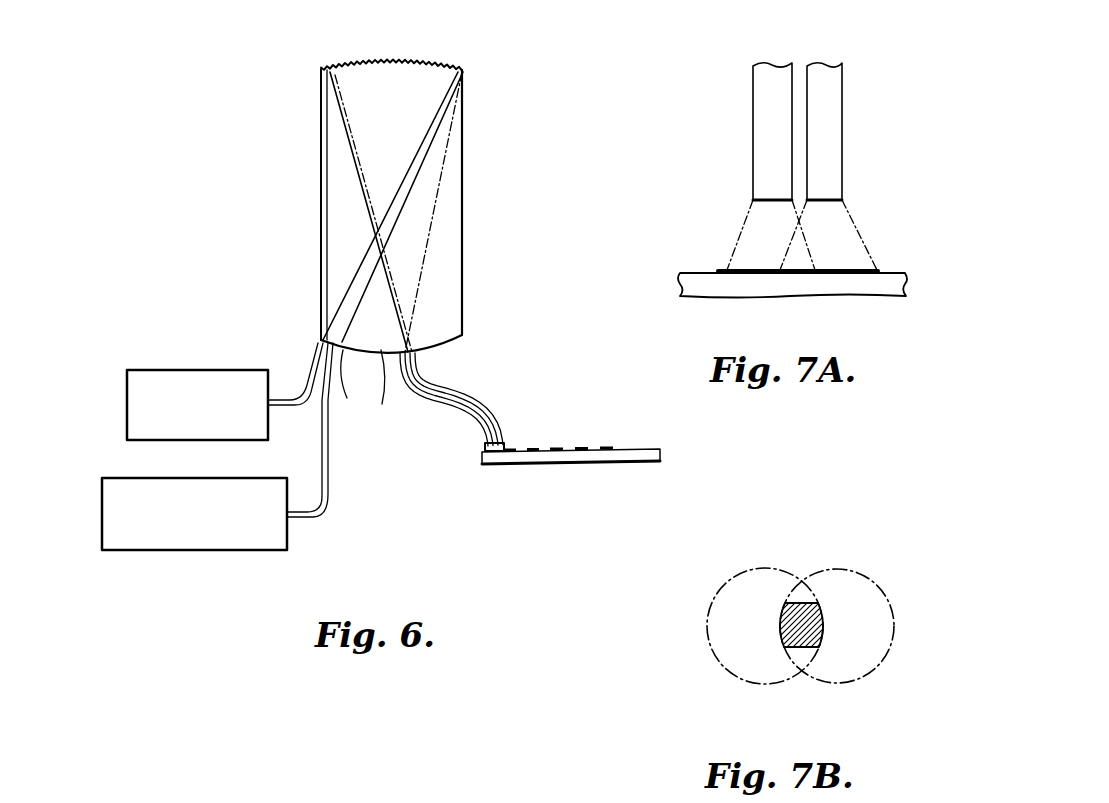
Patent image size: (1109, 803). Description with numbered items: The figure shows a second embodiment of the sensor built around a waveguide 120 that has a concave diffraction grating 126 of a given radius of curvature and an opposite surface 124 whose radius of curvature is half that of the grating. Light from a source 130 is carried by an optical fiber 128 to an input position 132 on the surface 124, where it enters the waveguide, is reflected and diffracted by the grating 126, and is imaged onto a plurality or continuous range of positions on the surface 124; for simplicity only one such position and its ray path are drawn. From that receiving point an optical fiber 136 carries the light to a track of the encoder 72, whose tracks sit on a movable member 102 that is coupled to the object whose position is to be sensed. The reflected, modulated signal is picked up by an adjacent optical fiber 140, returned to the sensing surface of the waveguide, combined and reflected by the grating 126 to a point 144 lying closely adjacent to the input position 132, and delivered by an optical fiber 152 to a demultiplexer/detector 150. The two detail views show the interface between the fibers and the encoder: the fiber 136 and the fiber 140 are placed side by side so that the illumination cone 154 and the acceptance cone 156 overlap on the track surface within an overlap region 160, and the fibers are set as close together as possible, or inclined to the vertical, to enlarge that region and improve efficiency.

In FIG. 6, the encoder 72 is at (545, 428).
In FIG. 7A, the movable member 102 is at (900, 281).
In FIG. 6, the waveguide 120 is at (320, 146).
In FIG. 6, the surface 124 is at (381, 405).
In FIG. 6, the concave diffraction grating 126 is at (396, 58).
In FIG. 6, the optical fiber 128 is at (286, 397).
In FIG. 6, the source 130 is at (181, 369).
In FIG. 6, the input position 132 is at (323, 339).
In FIG. 7A, the optical fiber 136 is at (833, 82).
In FIG. 7A, the optical fiber 140 is at (760, 80).
In FIG. 6, the point 144 is at (367, 385).
In FIG. 6, the demultiplexer/detector 150 is at (180, 551).
In FIG. 6, the optical fiber 152 is at (305, 522).
In FIG. 7A, the illumination cone 154 is at (847, 222).
In FIG. 7B, the illumination cone 154 is at (880, 588).
In FIG. 7A, the acceptance cone 156 is at (748, 222).
In FIG. 7B, the acceptance cone 156 is at (748, 569).
In FIG. 7A, the overlap region 160 is at (800, 268).
In FIG. 7B, the overlap region 160 is at (797, 607).